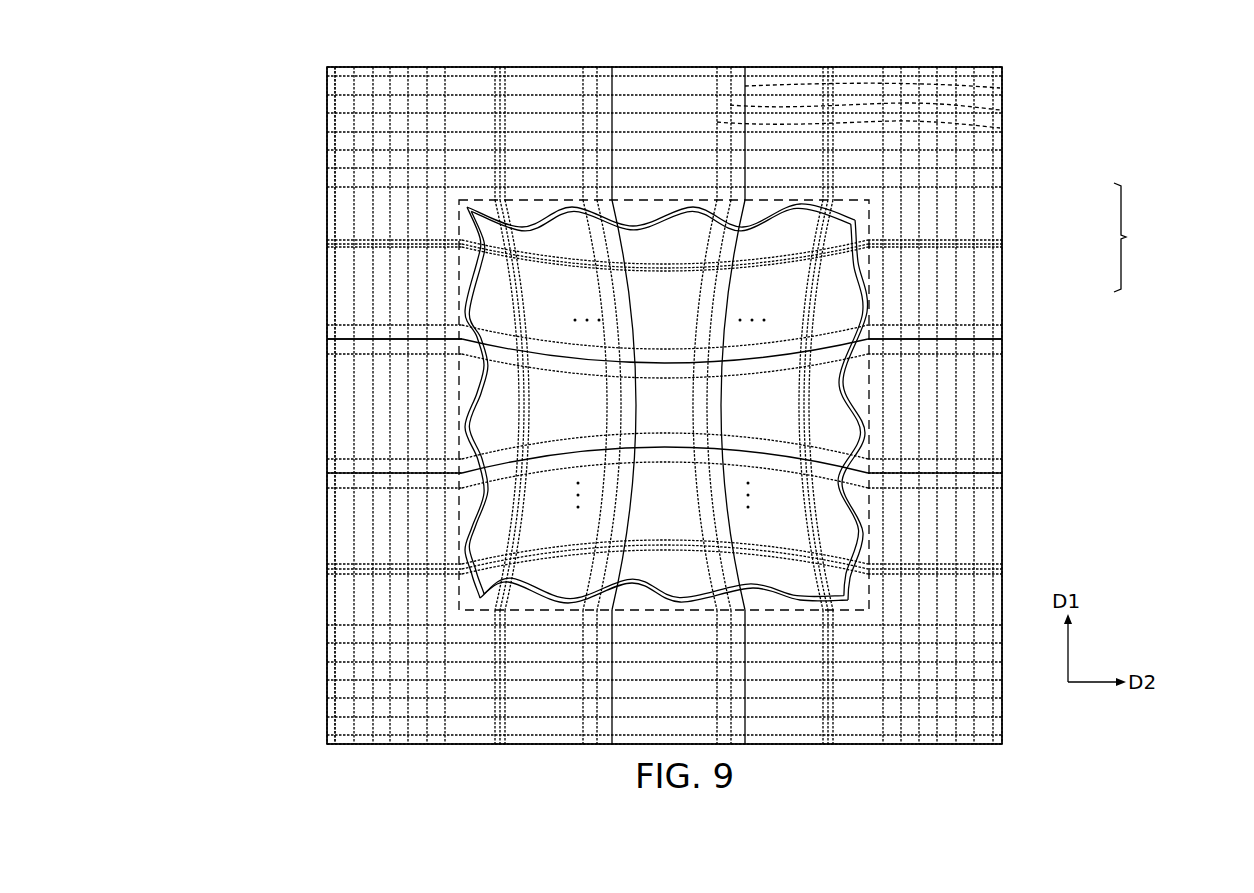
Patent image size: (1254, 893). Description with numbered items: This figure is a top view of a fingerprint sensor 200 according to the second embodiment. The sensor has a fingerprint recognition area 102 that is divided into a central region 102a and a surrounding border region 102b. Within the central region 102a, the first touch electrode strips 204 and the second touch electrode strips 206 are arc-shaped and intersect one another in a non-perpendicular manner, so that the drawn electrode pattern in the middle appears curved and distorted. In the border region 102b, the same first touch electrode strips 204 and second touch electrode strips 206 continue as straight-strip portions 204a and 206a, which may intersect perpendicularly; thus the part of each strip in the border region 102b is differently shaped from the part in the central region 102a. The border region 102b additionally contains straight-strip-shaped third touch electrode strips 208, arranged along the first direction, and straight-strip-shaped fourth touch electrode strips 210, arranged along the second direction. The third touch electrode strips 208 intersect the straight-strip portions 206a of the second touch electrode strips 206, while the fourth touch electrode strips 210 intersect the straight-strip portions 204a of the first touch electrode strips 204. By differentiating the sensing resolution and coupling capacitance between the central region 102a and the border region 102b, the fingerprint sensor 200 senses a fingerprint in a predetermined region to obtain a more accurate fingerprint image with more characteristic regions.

The fingerprint sensor 200 is at (1156, 116).
The fingerprint recognition area 102 is at (1141, 237).
The central region 102a is at (836, 277).
The border region 102b is at (990, 140).
The first touch electrode strips 204 is at (543, 375).
The straight-strip portions of the first touch electrode strips 204a is at (345, 353).
The second touch electrode strips 206 is at (725, 290).
The straight-strip portions of the second touch electrode strips 206a is at (1033, 133).
The third touch electrode strips 208 is at (372, 452).
The fourth touch electrode strips 210 is at (362, 135).